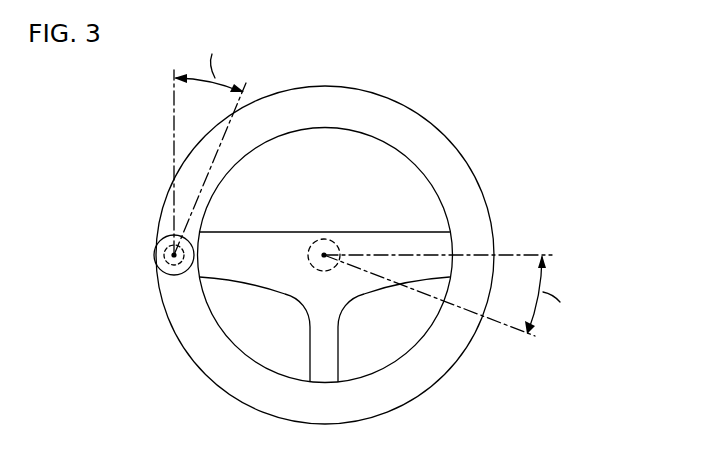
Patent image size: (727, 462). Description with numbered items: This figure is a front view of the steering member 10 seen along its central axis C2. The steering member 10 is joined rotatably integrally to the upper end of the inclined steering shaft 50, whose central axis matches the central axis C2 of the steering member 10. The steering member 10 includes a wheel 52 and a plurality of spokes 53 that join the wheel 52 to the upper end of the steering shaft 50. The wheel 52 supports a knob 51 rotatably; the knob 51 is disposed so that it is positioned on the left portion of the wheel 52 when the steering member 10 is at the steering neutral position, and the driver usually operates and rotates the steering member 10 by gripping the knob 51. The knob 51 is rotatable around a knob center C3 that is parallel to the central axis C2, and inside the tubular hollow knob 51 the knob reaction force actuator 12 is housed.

The steering member 10 is at (421, 111).
The knob reaction force actuator 12 is at (160, 253).
The steering shaft 50 is at (315, 272).
The knob 51 is at (160, 234).
The wheel 52 is at (324, 100).
The spokes 53 is at (240, 248).
The central axis of the steering member C2 is at (324, 240).
The knob center C3 is at (170, 262).